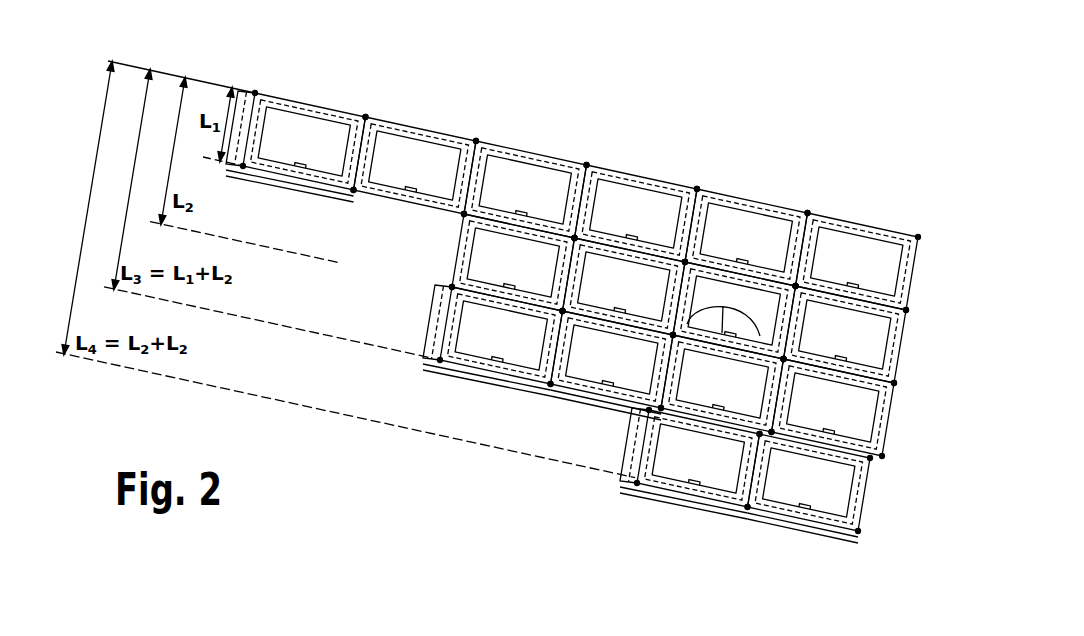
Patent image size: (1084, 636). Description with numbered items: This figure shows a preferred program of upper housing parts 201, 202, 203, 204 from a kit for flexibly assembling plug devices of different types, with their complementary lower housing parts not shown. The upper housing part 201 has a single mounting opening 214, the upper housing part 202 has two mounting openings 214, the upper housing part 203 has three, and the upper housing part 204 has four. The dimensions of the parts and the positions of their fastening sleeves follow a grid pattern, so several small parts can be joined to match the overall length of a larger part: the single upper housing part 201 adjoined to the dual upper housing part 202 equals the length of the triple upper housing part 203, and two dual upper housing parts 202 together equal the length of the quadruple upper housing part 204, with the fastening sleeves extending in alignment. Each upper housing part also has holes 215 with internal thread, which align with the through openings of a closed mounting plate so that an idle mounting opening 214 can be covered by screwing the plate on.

The upper housing part 201 is at (296, 95).
The upper housing part 202 is at (398, 123).
The upper housing part 203 is at (513, 147).
The upper housing part 204 is at (733, 197).
The mounting opening 214 is at (486, 270).
The hole with internal thread 215 is at (723, 310).